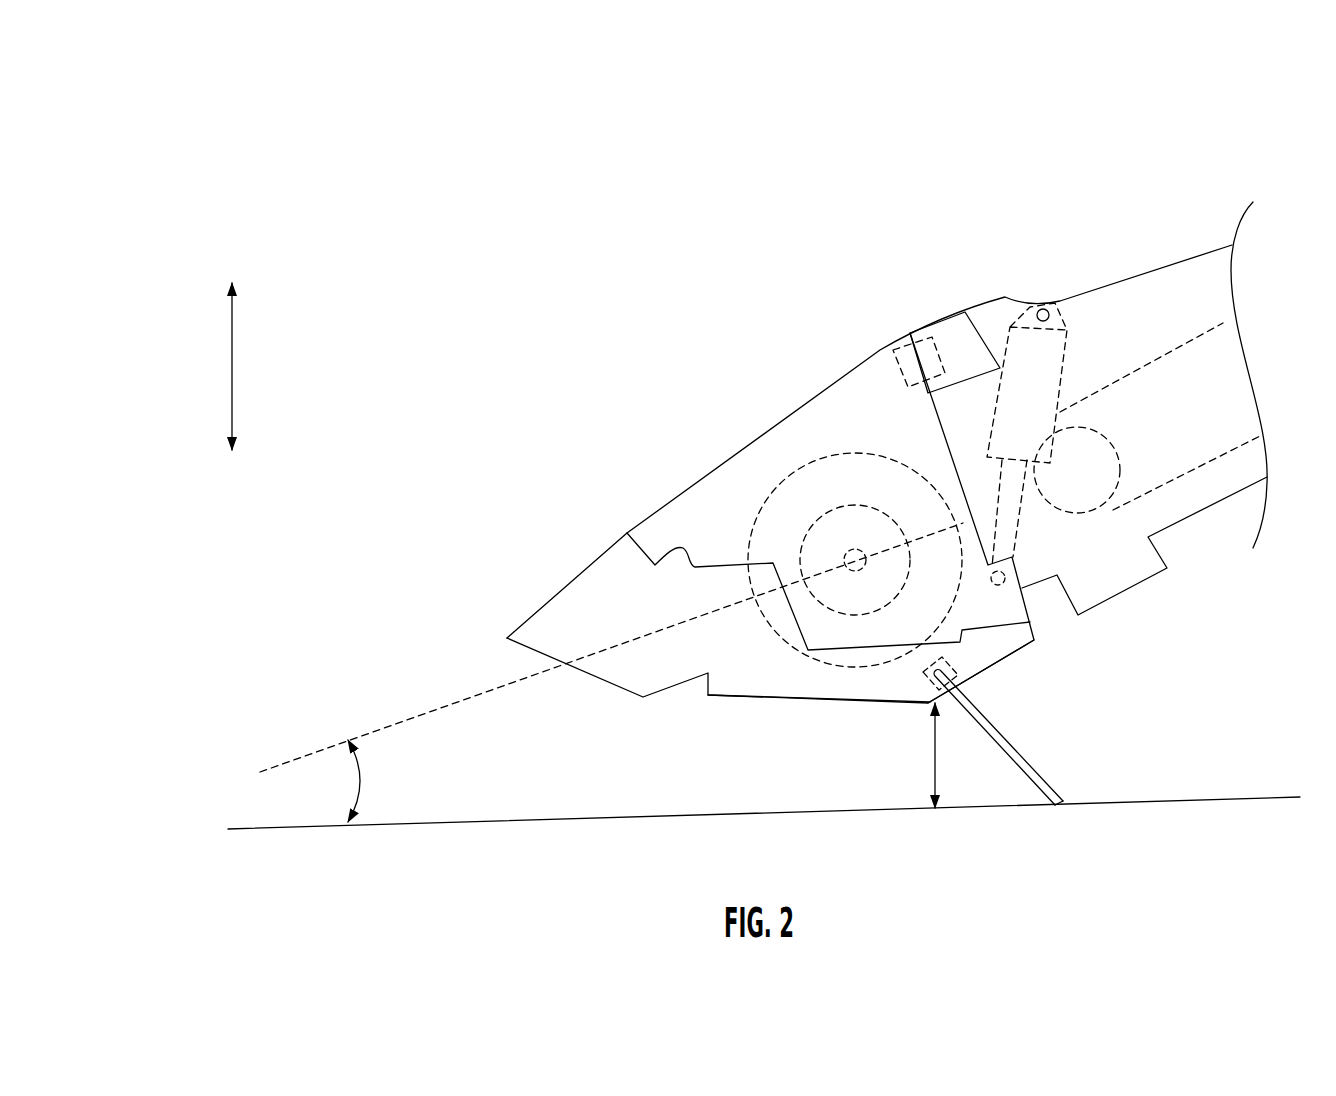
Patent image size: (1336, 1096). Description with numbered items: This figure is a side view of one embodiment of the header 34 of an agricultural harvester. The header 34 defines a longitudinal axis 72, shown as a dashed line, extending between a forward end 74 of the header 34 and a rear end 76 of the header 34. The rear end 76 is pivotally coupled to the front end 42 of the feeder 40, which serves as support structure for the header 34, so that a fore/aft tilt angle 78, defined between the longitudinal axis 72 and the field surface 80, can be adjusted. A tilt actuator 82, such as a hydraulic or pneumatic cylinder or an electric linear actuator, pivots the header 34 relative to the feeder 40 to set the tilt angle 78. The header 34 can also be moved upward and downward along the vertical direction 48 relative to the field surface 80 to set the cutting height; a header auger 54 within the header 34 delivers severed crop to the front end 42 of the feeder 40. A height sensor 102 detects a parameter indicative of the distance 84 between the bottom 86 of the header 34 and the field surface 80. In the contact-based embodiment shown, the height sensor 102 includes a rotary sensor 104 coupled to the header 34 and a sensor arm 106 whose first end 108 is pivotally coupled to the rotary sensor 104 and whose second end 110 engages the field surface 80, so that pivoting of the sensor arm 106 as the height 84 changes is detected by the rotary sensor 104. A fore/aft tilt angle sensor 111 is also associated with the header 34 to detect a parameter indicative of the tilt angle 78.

The header 34 is at (320, 110).
The feeder 40 is at (1212, 248).
The front end of the feeder 42 is at (990, 340).
The vertical direction 48 is at (232, 345).
The header auger 54 is at (852, 667).
The longitudinal axis 72 is at (400, 720).
The forward end of the header 74 is at (428, 643).
The rear end of the header 76 is at (875, 340).
The fore/aft tilt angle 78 is at (360, 780).
The field surface 80 is at (1128, 797).
The tilt actuator 82 is at (1060, 370).
The distance (header height) 84 is at (933, 763).
The bottom of the header 86 is at (858, 703).
The height sensor 102 is at (995, 688).
The rotary sensor 104 is at (923, 690).
The sensor arm 106 is at (1013, 757).
The first end of the sensor arm 108 is at (947, 672).
The second end of the sensor arm 110 is at (1067, 803).
The fore/aft tilt angle sensor 111 is at (908, 385).